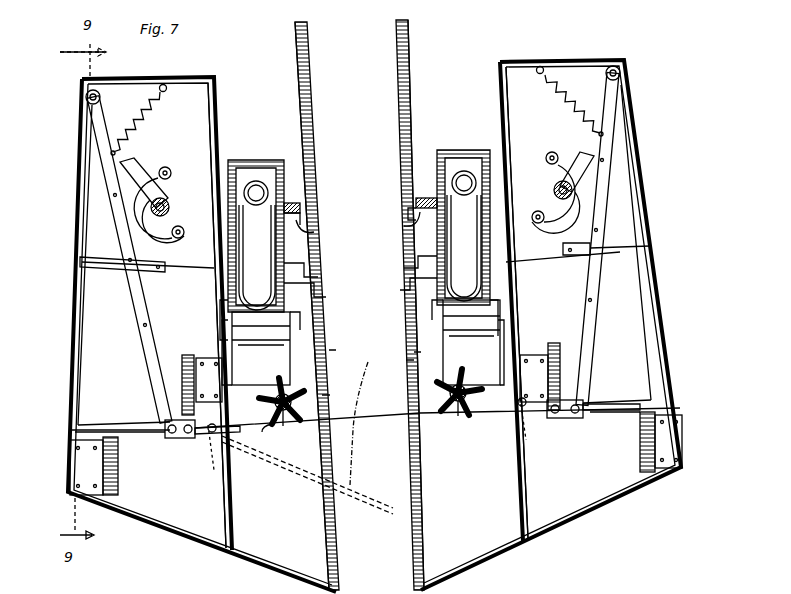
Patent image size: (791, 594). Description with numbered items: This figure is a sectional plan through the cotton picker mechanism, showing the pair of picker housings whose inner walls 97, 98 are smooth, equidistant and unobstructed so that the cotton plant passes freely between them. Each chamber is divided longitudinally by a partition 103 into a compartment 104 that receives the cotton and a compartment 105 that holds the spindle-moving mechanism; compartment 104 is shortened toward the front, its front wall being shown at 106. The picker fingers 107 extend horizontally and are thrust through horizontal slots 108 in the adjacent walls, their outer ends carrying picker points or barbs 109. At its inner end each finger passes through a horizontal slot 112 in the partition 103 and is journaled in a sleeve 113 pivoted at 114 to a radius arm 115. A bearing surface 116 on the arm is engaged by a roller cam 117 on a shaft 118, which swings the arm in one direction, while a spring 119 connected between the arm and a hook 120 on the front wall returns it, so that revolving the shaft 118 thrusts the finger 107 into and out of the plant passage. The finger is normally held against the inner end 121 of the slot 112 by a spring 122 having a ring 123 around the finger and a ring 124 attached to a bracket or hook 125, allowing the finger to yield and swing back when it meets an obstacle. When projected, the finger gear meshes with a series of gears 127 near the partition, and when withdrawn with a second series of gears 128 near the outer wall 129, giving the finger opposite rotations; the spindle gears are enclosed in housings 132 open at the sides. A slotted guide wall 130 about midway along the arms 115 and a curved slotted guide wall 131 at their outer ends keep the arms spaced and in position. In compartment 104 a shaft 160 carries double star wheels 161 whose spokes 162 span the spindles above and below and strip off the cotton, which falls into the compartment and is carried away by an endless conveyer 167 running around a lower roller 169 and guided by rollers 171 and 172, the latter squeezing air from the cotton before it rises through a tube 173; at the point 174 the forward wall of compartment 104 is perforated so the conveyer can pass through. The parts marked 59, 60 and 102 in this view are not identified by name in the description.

The right side frame 59 is at (668, 325).
The left side frame 60 is at (80, 346).
The inner wall 97 is at (322, 264).
The inner wall 98 is at (410, 297).
The star wheel hub 102 is at (452, 418).
The partition 103 is at (214, 272).
The compartment 104 is at (300, 318).
The compartment 105 is at (362, 349).
The front wall 106 is at (300, 215).
The picker finger 107 is at (364, 422).
The horizontal slot 108 is at (336, 528).
The picker point 109 is at (322, 346).
The horizontal slot 112 is at (236, 510).
The sleeve 113 is at (196, 440).
The pivot 114 is at (198, 436).
The radius arm 115 is at (140, 334).
The bearing surface 116 is at (136, 180).
The roller cam 117 is at (170, 176).
The shaft 118 is at (170, 210).
The spring 119 is at (140, 128).
The hook 120 is at (166, 91).
The inner end of groove 121 is at (262, 432).
The spring 122 is at (266, 401).
The ring 123 is at (212, 470).
The ring 124 is at (190, 354).
The bracket 125 is at (366, 342).
The gear series 127 is at (160, 408).
The second gear series 128 is at (118, 470).
The outer wall 129 is at (82, 386).
The slotted guide wall 130 is at (160, 262).
The curved slotted guide wall 131 is at (155, 436).
The housing 132 is at (168, 422).
The shaft 160 is at (414, 392).
The double star wheel 161 is at (322, 395).
The spoke 162 is at (283, 430).
The endless conveyer 167 is at (260, 162).
The roller 169 is at (363, 352).
The roller 171 is at (360, 262).
The roller 172 is at (316, 290).
The tube 173 is at (288, 208).
The perforation point 174 is at (314, 232).